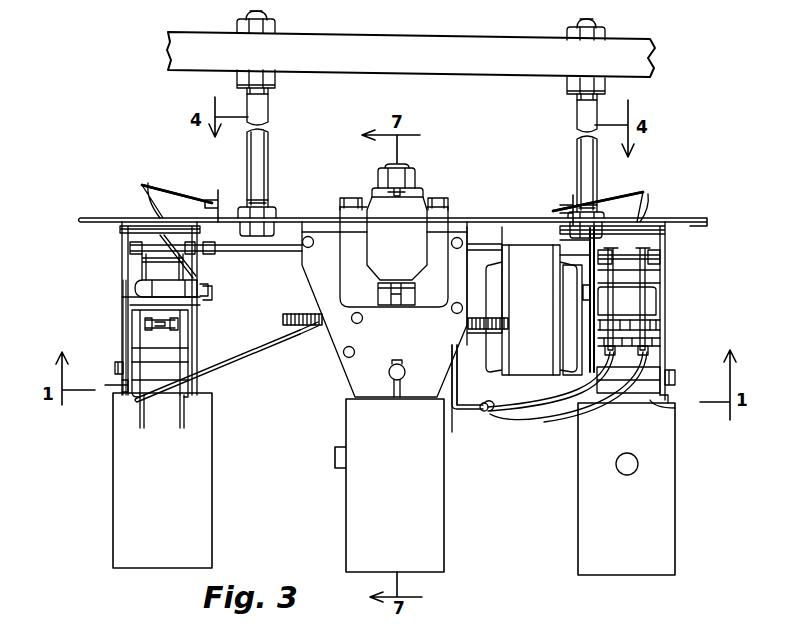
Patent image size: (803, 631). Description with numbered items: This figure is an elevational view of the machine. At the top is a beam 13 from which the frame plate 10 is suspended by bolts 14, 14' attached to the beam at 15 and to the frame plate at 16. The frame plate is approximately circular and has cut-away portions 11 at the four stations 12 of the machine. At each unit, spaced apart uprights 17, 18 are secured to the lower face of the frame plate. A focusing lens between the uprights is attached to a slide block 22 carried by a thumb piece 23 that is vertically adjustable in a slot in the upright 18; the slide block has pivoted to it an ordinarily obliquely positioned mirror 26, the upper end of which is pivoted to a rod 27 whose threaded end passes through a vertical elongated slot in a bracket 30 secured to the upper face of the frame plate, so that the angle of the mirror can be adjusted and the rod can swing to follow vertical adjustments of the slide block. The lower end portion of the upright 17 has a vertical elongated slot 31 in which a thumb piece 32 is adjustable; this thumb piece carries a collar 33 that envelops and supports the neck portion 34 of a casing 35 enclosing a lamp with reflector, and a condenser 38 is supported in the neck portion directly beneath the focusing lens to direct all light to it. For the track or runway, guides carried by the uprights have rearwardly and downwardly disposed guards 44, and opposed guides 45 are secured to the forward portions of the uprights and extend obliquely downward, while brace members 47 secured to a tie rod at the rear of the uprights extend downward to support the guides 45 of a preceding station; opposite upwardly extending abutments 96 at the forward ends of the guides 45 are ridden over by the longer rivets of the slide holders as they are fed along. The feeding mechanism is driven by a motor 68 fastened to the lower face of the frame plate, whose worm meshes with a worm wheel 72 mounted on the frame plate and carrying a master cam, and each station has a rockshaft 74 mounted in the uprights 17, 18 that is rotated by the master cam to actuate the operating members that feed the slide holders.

The frame plate 10 is at (86, 218).
The cut-away portions 11 is at (442, 226).
The stations 12 is at (350, 280).
The beam 13 is at (418, 22).
The bolts 14 is at (571, 153).
The support column 14' is at (273, 147).
The attachment of bolts to beam 15 is at (270, 32).
The attachment of bolts to frame plate 16 is at (298, 212).
The upright 17 is at (122, 297).
The upright 18 is at (211, 297).
The slide block 22 is at (200, 285).
The thumb piece 23 is at (214, 289).
The mirror 26 is at (146, 204).
The rod 27 is at (192, 190).
The bracket 30 is at (218, 192).
The vertical elongated slot 31 is at (392, 386).
The thumb piece 32 is at (115, 369).
The collar 33 is at (122, 386).
The neck portion 34 is at (678, 410).
The casing 35 is at (213, 460).
The condenser 38 is at (158, 366).
The guards 44 is at (182, 428).
The guides 45 is at (244, 376).
The brace members 47 is at (458, 396).
The motor 68 is at (548, 375).
The worm wheel 72 is at (296, 326).
The rockshaft 74 is at (268, 250).
The abutments 96 is at (486, 412).